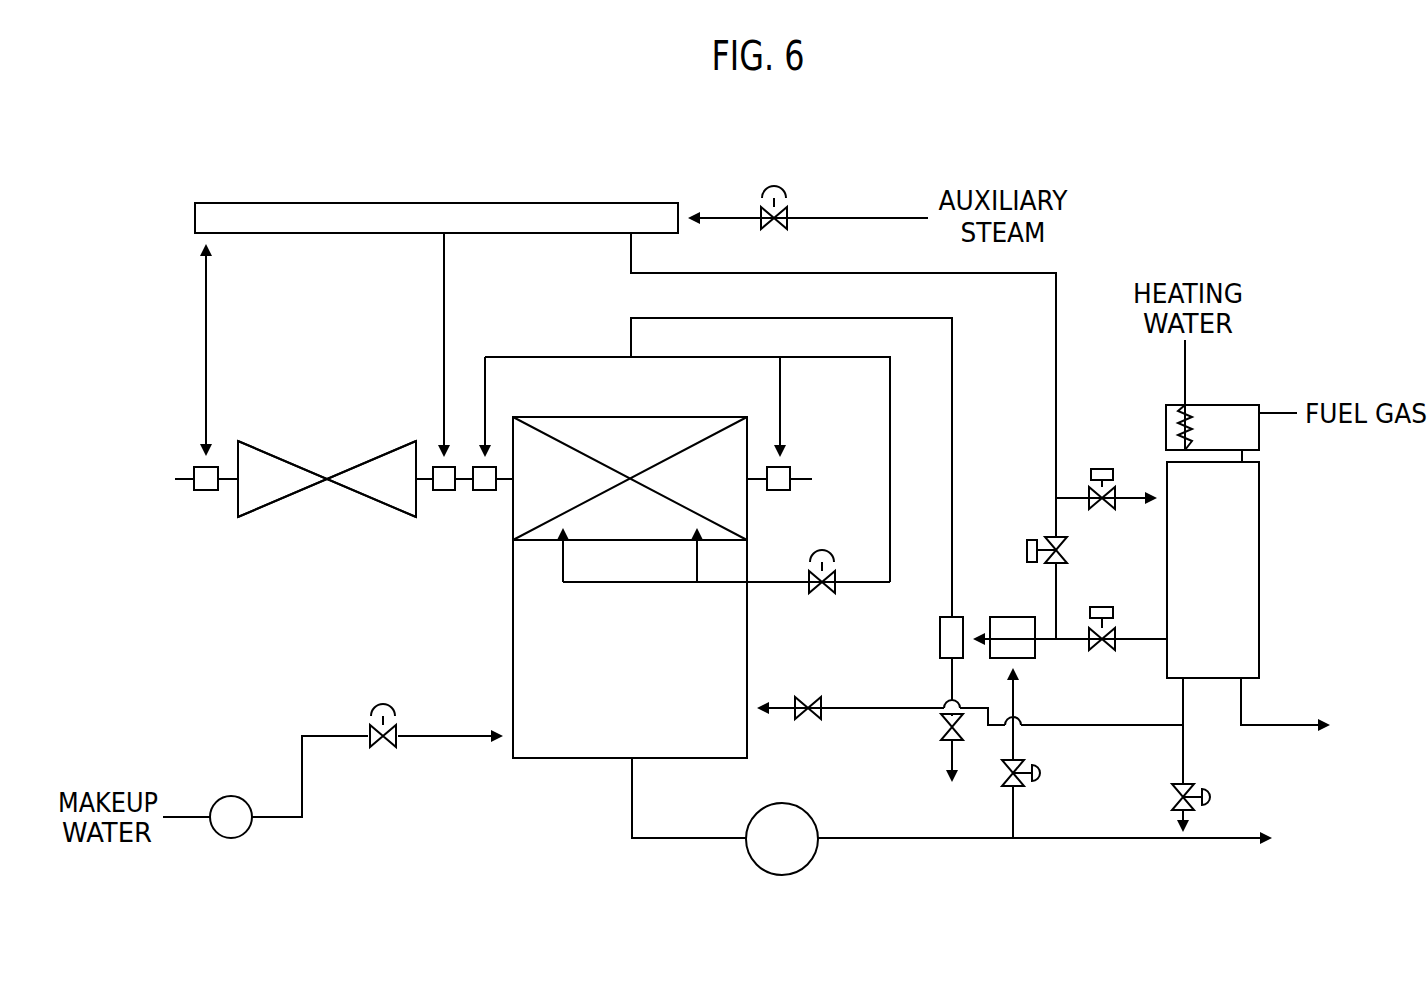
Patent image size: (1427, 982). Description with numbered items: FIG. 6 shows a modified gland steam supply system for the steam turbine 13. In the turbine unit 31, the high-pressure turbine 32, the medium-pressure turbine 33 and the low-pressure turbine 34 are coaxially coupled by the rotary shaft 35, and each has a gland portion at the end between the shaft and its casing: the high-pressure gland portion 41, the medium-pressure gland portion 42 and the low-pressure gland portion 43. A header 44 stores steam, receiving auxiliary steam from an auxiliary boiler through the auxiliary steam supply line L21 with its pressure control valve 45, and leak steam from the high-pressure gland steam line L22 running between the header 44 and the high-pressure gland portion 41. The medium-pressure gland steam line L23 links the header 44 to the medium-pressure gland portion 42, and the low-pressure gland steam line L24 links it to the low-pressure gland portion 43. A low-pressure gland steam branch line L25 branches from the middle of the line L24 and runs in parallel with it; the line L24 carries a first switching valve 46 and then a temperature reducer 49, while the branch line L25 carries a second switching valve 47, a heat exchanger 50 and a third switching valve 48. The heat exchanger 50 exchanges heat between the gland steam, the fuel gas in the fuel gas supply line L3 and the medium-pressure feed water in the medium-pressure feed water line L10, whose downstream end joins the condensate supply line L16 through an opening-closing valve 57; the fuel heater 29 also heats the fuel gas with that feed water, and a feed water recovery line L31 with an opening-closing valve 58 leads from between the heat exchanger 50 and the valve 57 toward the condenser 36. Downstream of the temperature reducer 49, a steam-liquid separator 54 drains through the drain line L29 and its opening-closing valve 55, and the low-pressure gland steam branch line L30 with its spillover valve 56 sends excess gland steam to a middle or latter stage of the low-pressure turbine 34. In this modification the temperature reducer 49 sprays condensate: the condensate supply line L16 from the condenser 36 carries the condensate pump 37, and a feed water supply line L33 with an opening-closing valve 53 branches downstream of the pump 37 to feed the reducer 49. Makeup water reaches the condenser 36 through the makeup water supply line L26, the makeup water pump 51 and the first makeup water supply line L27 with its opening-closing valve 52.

The steam turbine 13 is at (368, 165).
The header 44 is at (515, 203).
The pressure control valve 45 is at (790, 205).
The auxiliary steam supply line L21 is at (870, 212).
The high-pressure gland steam line L22 is at (206, 273).
The medium-pressure gland steam line L23 is at (444, 275).
The low-pressure gland steam line L24 is at (1056, 283).
The low-pressure gland steam branch line L30 is at (890, 385).
The rotary shaft 35 is at (185, 465).
The high-pressure gland portion 41 is at (208, 492).
The medium-pressure gland portion 42 is at (440, 465).
The low-pressure gland portion 43 is at (478, 465).
The gas turbine 31 is at (493, 587).
The high-pressure turbine 32 is at (285, 485).
The medium-pressure turbine 33 is at (381, 486).
The low-pressure turbine 34 is at (530, 498).
The condenser 36 is at (747, 665).
The spillover valve 56 is at (830, 594).
The fuel heater 29 is at (1210, 405).
The medium-pressure feed water line L10 is at (1185, 370).
The fuel gas supply line L3 is at (1268, 413).
The heat exchanger 50 is at (1261, 493).
The low-pressure gland steam branch line L25 is at (1135, 490).
The first switching valve 46 is at (1048, 540).
The second switching valve 47 is at (1102, 510).
The third switching valve 48 is at (1107, 652).
The temperature reducer 49 is at (998, 617).
The steam-liquid separator 54 is at (940, 640).
The opening-closing valve 55 is at (941, 733).
The opening-closing valve 53 is at (1000, 785).
The drain line L29 is at (945, 688).
The opening-closing valve 58 is at (818, 720).
The feed water recovery line L31 is at (1072, 727).
The feed water supply line L33 is at (1013, 820).
The opening-closing valve 57 is at (1172, 800).
The condensate supply line L16 is at (1092, 840).
The condensate pump 37 is at (782, 803).
The makeup water supply line L26 is at (178, 812).
The makeup water pump 51 is at (228, 796).
The opening-closing valve 52 is at (388, 750).
The first makeup water supply line L27 is at (448, 730).